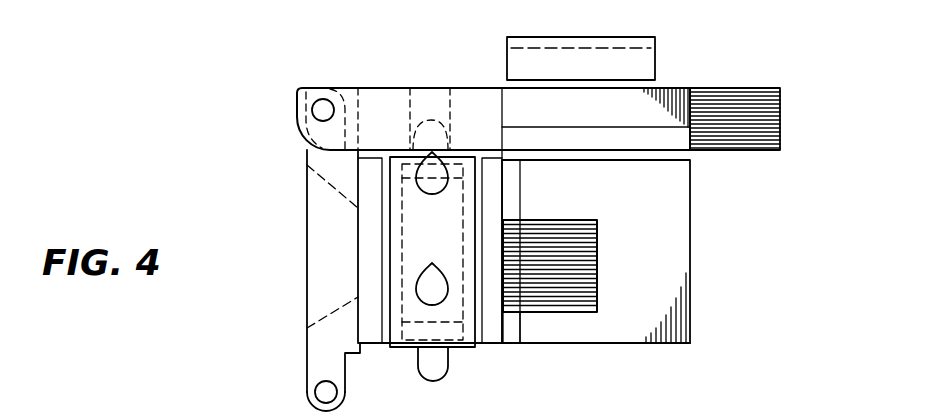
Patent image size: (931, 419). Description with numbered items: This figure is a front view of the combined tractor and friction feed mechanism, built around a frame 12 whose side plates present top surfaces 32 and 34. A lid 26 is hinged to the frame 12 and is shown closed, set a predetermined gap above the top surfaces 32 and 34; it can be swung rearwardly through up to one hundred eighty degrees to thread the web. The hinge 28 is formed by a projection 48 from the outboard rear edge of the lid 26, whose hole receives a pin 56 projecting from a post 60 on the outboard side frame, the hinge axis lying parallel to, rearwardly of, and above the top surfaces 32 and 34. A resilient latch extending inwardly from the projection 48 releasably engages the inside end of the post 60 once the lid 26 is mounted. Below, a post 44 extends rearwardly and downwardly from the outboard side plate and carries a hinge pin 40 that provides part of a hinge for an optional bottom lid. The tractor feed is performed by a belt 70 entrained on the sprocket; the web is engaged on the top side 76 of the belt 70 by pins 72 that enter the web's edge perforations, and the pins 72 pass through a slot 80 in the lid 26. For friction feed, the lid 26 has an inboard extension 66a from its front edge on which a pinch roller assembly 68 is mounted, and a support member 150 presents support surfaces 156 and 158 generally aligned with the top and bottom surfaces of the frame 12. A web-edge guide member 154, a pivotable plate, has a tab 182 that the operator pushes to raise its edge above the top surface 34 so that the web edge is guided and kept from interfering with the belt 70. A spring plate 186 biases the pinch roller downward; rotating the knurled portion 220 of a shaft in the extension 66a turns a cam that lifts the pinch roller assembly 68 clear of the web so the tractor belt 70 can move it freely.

The frame 12 is at (373, 350).
The lid 26 is at (391, 88).
The hinge 28 is at (289, 106).
The top surface 32 is at (365, 158).
The top surface 34 is at (497, 158).
The hinge pin 40 is at (309, 395).
The post 44 is at (305, 351).
The projection 48 is at (345, 88).
The pin 56 is at (316, 119).
The post 60 is at (306, 90).
The inboard extension 66a is at (672, 84).
The pinch roller assembly 68 is at (662, 41).
The belt 70 is at (461, 348).
The pins 72 is at (443, 175).
The top side 76 is at (458, 150).
The slot 80 is at (413, 100).
The support member 150 is at (693, 223).
The web-edge guide member 154 is at (512, 346).
The support surface 156 is at (652, 152).
The support surface 158 is at (628, 345).
The tab 182 is at (547, 218).
The spring plate 186 is at (614, 413).
The knurled portion 220 is at (728, 150).